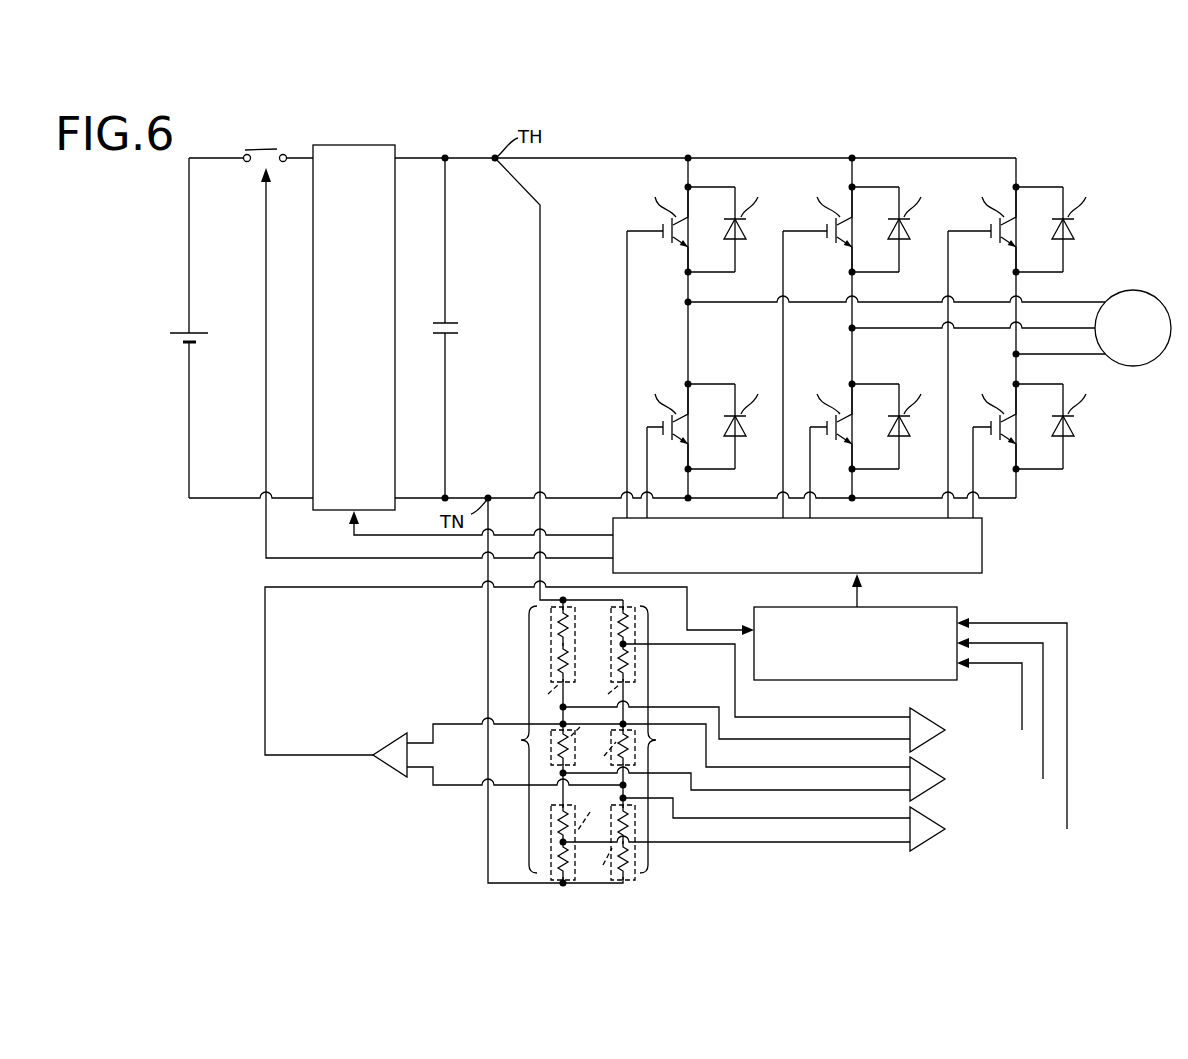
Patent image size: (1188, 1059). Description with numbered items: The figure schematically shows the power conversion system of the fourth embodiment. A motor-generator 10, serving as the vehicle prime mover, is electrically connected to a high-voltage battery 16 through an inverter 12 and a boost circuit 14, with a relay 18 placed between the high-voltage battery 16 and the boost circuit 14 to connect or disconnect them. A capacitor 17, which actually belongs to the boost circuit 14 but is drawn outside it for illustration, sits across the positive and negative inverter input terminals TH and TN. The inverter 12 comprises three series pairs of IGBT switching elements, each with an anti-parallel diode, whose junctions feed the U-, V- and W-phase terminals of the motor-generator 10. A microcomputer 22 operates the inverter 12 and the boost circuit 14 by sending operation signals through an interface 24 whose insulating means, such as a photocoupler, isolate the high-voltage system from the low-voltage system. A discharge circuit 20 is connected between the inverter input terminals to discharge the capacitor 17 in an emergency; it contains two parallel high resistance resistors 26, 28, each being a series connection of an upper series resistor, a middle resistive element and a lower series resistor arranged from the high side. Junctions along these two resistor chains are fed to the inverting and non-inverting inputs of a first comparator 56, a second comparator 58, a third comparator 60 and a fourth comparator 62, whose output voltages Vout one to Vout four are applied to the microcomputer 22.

The motor-generator 10 is at (1139, 291).
The inverter 12 is at (1053, 164).
The boost circuit 14 is at (383, 145).
The high-voltage battery 16 is at (199, 331).
The capacitor 17 is at (452, 322).
The relay 18 is at (268, 147).
The discharge circuit 20 is at (558, 692).
The microcomputer 22 is at (938, 607).
The interface 24 is at (985, 545).
The high resistance resistor 26 is at (535, 743).
The high resistance resistor 28 is at (647, 740).
The first comparator 56 is at (388, 766).
The second comparator 58 is at (930, 794).
The third comparator 60 is at (930, 744).
The fourth comparator 62 is at (930, 842).